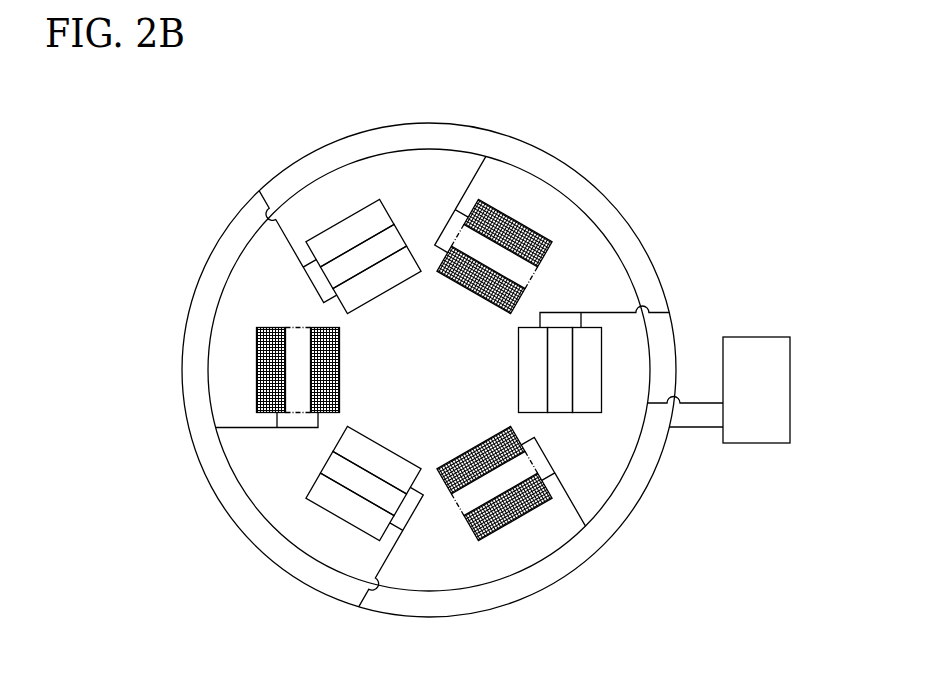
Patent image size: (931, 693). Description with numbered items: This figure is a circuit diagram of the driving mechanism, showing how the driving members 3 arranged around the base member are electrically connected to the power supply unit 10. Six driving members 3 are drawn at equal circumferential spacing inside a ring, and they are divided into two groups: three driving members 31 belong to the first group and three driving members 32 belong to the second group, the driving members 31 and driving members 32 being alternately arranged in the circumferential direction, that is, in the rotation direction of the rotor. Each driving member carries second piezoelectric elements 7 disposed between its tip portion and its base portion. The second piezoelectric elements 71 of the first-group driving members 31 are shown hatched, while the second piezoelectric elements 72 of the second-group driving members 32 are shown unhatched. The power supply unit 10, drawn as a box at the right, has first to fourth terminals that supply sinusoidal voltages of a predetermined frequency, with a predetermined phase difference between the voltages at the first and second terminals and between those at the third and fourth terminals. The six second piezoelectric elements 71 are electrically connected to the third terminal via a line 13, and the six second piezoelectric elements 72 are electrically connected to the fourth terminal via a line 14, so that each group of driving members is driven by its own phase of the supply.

The driving member 3 is at (454, 370).
The second piezoelectric element 7 is at (454, 370).
The power supply unit 10 is at (772, 336).
The line 13 is at (630, 270).
The line 14 is at (642, 500).
The driving member of the first group 31 is at (454, 326).
The driving member of the second group 32 is at (474, 372).
The second piezoelectric element of the first group 71 is at (522, 292).
The second piezoelectric element of the second group 72 is at (373, 460).